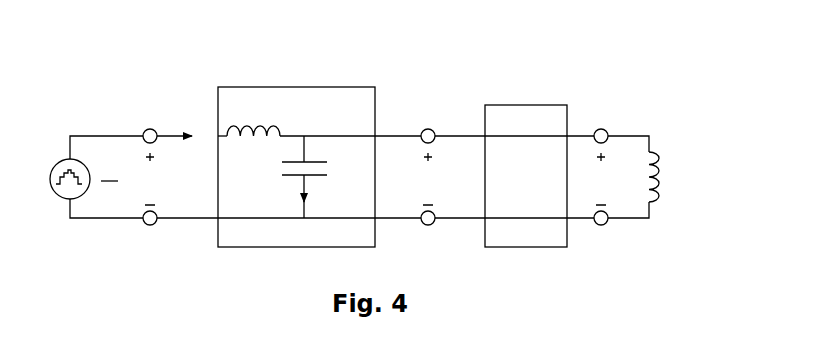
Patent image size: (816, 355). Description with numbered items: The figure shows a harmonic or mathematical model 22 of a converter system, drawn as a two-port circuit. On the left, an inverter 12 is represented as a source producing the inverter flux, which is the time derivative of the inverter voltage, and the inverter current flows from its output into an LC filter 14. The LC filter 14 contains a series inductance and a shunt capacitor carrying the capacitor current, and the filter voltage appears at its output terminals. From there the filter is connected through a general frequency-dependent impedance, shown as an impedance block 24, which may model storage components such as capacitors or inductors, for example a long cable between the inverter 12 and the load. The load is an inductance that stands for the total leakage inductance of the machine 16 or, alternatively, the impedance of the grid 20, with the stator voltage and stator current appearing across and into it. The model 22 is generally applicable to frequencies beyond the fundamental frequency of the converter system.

The inverter 12 is at (105, 93).
The LC filter 14 is at (288, 87).
The harmonic/mathematical model 22 is at (448, 70).
The impedance block 24 is at (510, 105).
The machine 16 is at (668, 105).
The grid 20 is at (644, 177).